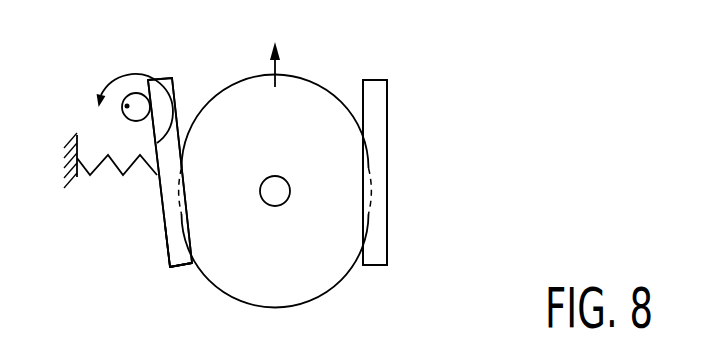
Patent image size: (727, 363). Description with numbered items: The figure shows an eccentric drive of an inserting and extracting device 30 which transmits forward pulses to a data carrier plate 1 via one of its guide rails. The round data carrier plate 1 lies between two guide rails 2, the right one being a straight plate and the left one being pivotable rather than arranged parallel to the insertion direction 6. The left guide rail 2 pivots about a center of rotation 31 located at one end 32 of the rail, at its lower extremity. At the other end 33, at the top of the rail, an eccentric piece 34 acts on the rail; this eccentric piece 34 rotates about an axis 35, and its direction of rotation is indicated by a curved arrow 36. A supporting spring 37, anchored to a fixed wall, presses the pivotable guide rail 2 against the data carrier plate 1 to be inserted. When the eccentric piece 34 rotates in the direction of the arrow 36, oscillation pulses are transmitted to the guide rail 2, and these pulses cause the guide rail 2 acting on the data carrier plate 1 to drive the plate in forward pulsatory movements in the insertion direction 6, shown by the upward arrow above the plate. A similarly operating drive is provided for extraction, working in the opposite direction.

The data carrier plate 1 is at (238, 118).
The guide rail 2 is at (173, 233).
The insertion direction 6 is at (277, 75).
The inserting and extracting device 30 is at (401, 151).
The center of rotation 31 is at (170, 267).
The one end of the guide rail 32 is at (178, 250).
The other end of the guide rail 33 is at (168, 78).
The eccentric piece 34 is at (136, 100).
The axis 35 is at (127, 106).
The arrow indicating direction of rotation 36 is at (110, 80).
The supporting spring 37 is at (88, 175).